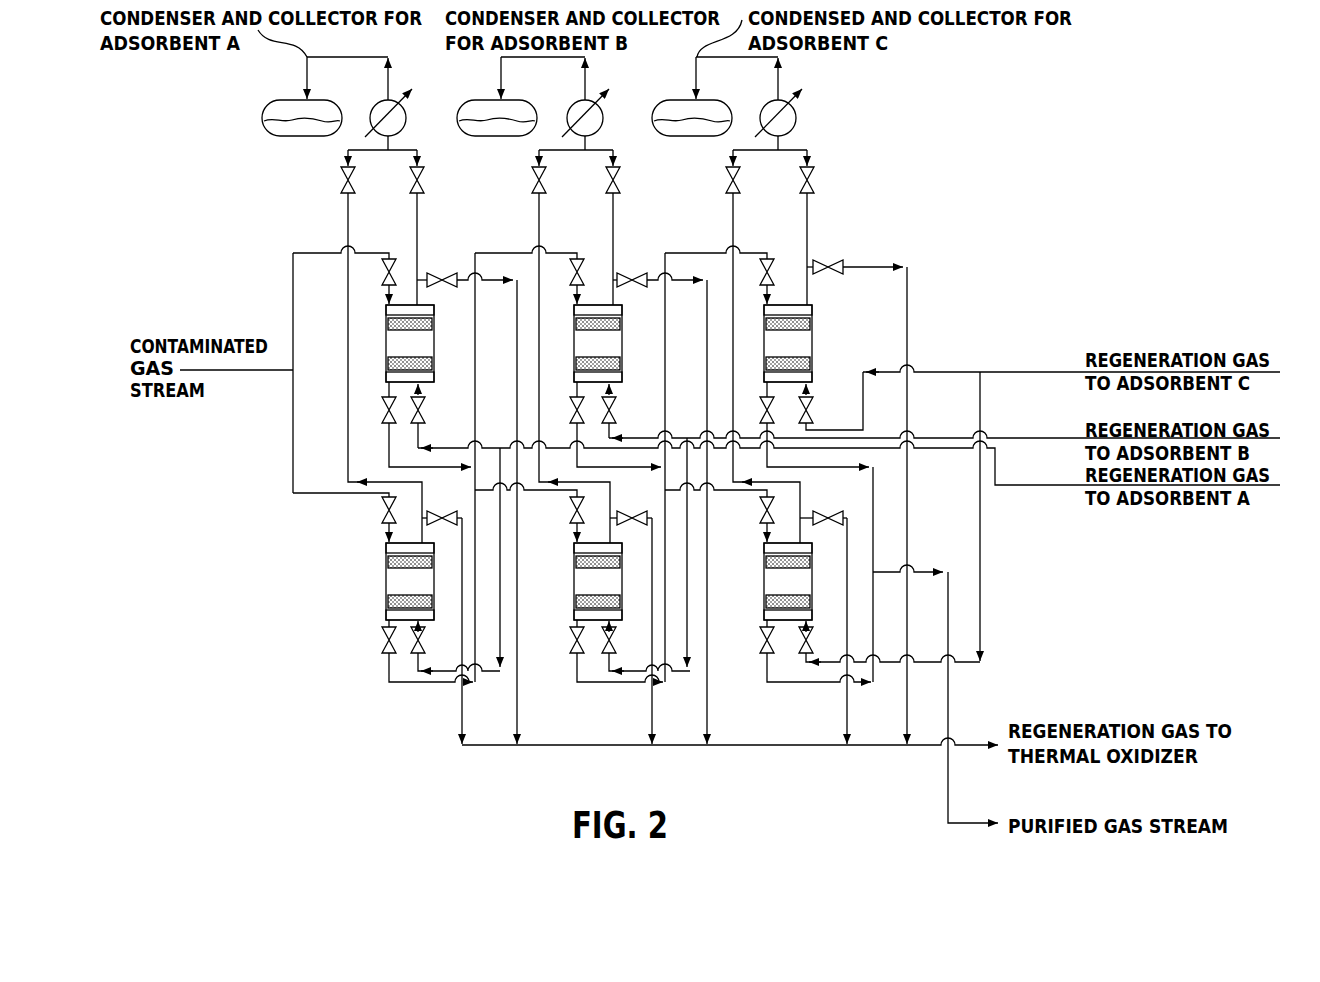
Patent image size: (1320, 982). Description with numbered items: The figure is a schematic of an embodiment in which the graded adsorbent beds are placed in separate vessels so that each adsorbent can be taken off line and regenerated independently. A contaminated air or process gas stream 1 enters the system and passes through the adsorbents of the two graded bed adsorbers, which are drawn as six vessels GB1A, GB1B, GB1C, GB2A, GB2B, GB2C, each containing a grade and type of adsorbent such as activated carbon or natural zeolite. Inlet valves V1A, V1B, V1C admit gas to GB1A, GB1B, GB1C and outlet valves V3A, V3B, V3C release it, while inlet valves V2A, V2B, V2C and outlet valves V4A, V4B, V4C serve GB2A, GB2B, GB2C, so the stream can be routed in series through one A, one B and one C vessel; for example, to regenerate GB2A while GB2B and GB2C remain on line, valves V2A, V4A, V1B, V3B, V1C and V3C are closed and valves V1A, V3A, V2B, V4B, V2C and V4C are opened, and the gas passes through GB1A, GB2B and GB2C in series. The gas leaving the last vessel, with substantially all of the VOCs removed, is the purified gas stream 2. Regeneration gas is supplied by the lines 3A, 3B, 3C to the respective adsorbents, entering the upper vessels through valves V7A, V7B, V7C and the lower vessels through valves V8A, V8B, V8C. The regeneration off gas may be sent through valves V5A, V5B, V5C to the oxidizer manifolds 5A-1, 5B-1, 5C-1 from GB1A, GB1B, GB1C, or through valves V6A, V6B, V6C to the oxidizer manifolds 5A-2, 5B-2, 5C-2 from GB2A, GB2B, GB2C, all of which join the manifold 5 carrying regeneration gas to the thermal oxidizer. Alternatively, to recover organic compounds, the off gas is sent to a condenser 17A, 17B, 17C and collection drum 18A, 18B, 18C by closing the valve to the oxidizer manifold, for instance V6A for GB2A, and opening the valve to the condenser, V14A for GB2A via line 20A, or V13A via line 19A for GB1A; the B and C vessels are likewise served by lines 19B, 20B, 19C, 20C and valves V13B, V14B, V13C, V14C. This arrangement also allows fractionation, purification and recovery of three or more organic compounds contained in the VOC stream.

The contaminated gas stream 1 is at (236, 382).
The purified gas stream 2 is at (935, 696).
The oxidizer manifold 5 is at (730, 732).
The regeneration gas line to adsorbent A 3A is at (521, 670).
The regeneration gas line to adsorbent B 3B is at (724, 656).
The regeneration gas line to adsorbent C 3C is at (798, 688).
The oxidizer manifold 5A-1 is at (542, 512).
The oxidizer manifold 5A-2 is at (432, 631).
The oxidizer manifold 5B-1 is at (732, 512).
The oxidizer manifold 5B-2 is at (622, 631).
The oxidizer manifold 5C-1 is at (882, 505).
The oxidizer manifold 5C-2 is at (821, 631).
The condenser 17A is at (405, 97).
The condenser 17B is at (602, 97).
The condenser 17C is at (796, 97).
The collection drum 18A is at (307, 96).
The collection drum 18B is at (503, 96).
The collection drum 18C is at (697, 96).
The off gas line to condenser 19A is at (394, 249).
The off gas line to condenser 19B is at (591, 249).
The off gas line to condenser 19C is at (785, 249).
The off gas line to condenser 20A is at (363, 368).
The off gas line to condenser 20B is at (551, 368).
The off gas line to condenser 20C is at (743, 368).
The adsorbent A of first graded bed adsorber GB1A is at (410, 343).
The adsorbent B of first graded bed adsorber GB1B is at (598, 343).
The adsorbent C of first graded bed adsorber GB1C is at (788, 343).
The adsorbent A of second graded bed adsorber GB2A is at (410, 581).
The adsorbent B of second graded bed adsorber GB2B is at (598, 581).
The adsorbent C of second graded bed adsorber GB2C is at (788, 581).
The inlet valve V1A is at (381, 266).
The inlet valve V1B is at (571, 270).
The inlet valve V1C is at (760, 272).
The inlet valve V2A is at (344, 517).
The inlet valve V2B is at (529, 512).
The inlet valve V2C is at (719, 512).
The outlet valve V3A is at (382, 409).
The outlet valve V3B is at (570, 410).
The outlet valve V3C is at (760, 412).
The outlet valve V4A is at (406, 651).
The outlet valve V4B is at (595, 651).
The outlet valve V4C is at (794, 651).
The oxidizer manifold valve V5A is at (465, 268).
The oxidizer manifold valve V5B is at (657, 268).
The oxidizer manifold valve V5C is at (855, 255).
The oxidizer manifold valve V6A is at (447, 505).
The oxidizer manifold valve V6B is at (636, 505).
The oxidizer manifold valve V6C is at (828, 505).
The regeneration gas inlet valve V7A is at (425, 411).
The regeneration gas inlet valve V7B is at (616, 411).
The regeneration gas inlet valve V7C is at (813, 405).
The regeneration gas inlet valve V8A is at (455, 646).
The regeneration gas inlet valve V8B is at (617, 647).
The regeneration gas inlet valve V8C is at (889, 641).
The condenser valve V13A is at (389, 180).
The condenser valve V13B is at (585, 180).
The condenser valve V13C is at (779, 180).
The condenser valve V14A is at (320, 180).
The condenser valve V14B is at (511, 180).
The condenser valve V14C is at (705, 180).